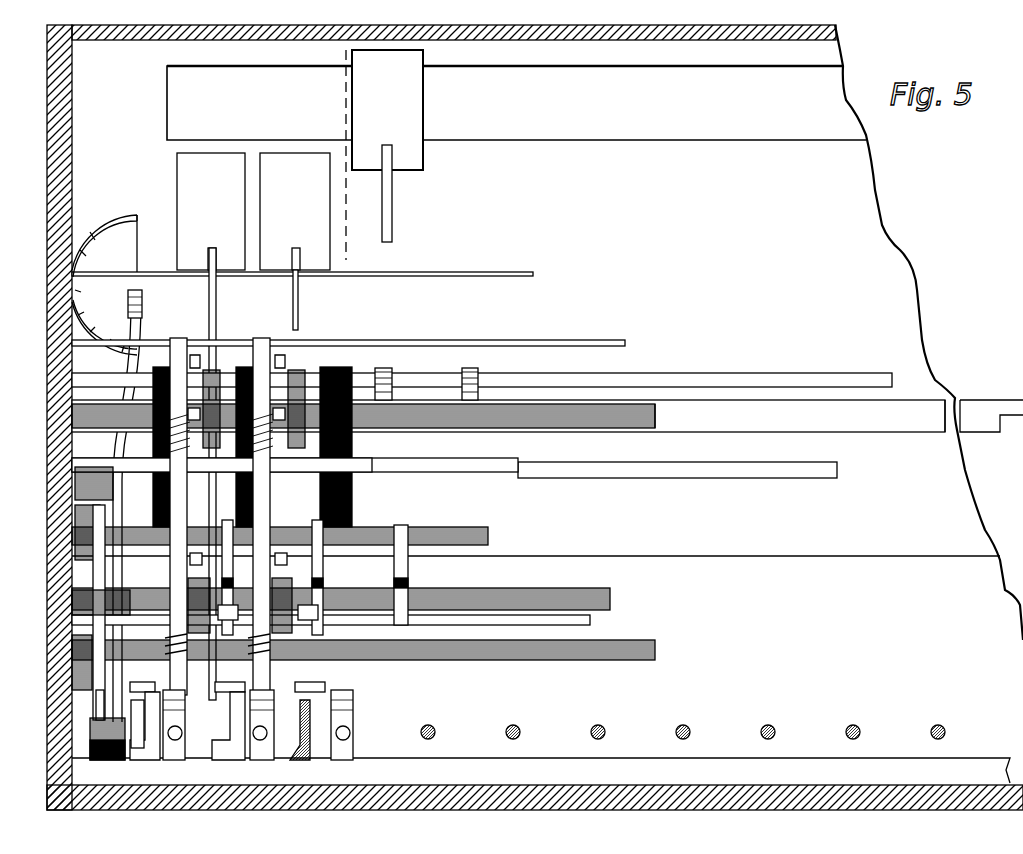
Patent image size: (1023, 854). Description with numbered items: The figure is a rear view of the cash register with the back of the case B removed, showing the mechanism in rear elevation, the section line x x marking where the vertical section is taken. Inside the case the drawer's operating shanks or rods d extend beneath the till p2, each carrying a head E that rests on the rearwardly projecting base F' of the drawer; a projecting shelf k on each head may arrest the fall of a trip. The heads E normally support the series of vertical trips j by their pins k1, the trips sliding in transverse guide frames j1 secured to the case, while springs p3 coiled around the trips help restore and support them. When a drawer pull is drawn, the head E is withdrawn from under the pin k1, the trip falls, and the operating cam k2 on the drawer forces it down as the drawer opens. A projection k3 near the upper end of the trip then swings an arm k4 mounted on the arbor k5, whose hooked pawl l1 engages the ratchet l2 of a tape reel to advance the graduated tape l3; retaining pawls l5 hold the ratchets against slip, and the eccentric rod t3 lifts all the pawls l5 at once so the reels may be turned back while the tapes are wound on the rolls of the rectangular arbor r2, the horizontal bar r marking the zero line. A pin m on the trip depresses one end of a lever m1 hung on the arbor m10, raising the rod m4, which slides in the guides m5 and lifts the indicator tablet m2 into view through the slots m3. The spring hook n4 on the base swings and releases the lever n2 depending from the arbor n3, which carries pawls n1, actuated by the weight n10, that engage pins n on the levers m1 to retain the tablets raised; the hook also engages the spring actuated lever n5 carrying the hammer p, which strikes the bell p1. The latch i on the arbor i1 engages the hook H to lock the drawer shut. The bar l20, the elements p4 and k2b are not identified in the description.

The case B is at (535, 406).
The section line x is at (339, 393).
The slots m3 is at (516, 103).
The indicator tablet m2 is at (177, 190).
The guides m5 is at (302, 264).
The rod m4 is at (290, 300).
The bell p1 is at (104, 285).
The hammer p is at (143, 296).
The horizontal bar r is at (446, 336).
The bar l20 is at (705, 380).
The eccentric rod t3 is at (547, 416).
The retaining pawls l5 is at (473, 370).
The arbor k5 is at (590, 412).
The rectangular arbor r2 is at (677, 464).
The guide frames j1 is at (638, 607).
The arbor n3 is at (280, 524).
The arbor m10 is at (568, 596).
The arbor i1 is at (375, 650).
The base F' is at (541, 771).
The till p2 is at (868, 624).
The trips j is at (222, 447).
The arm k4 is at (222, 516).
The hooked pawl l1 is at (300, 374).
The ratchet l2 is at (253, 432).
The operating cam k2 is at (196, 355).
The pin or projection k3 is at (288, 355).
The tapes l3 is at (356, 446).
The springs p3 is at (262, 430).
The spring actuated lever n5 is at (118, 456).
The weight n10 is at (94, 612).
The lever n2 is at (115, 582).
The hook H is at (90, 690).
The latch i is at (91, 708).
The spring hook n4 is at (97, 739).
The pawls or hooks n1 is at (410, 570).
The pin m is at (229, 559).
The lever m1 is at (241, 605).
The pin n is at (268, 613).
The spring p4 is at (270, 650).
The pin or projection k1 is at (227, 683).
The head E is at (360, 695).
The shelf k is at (353, 718).
The bracket k2b is at (328, 712).
The operating shanks or rods d is at (689, 721).